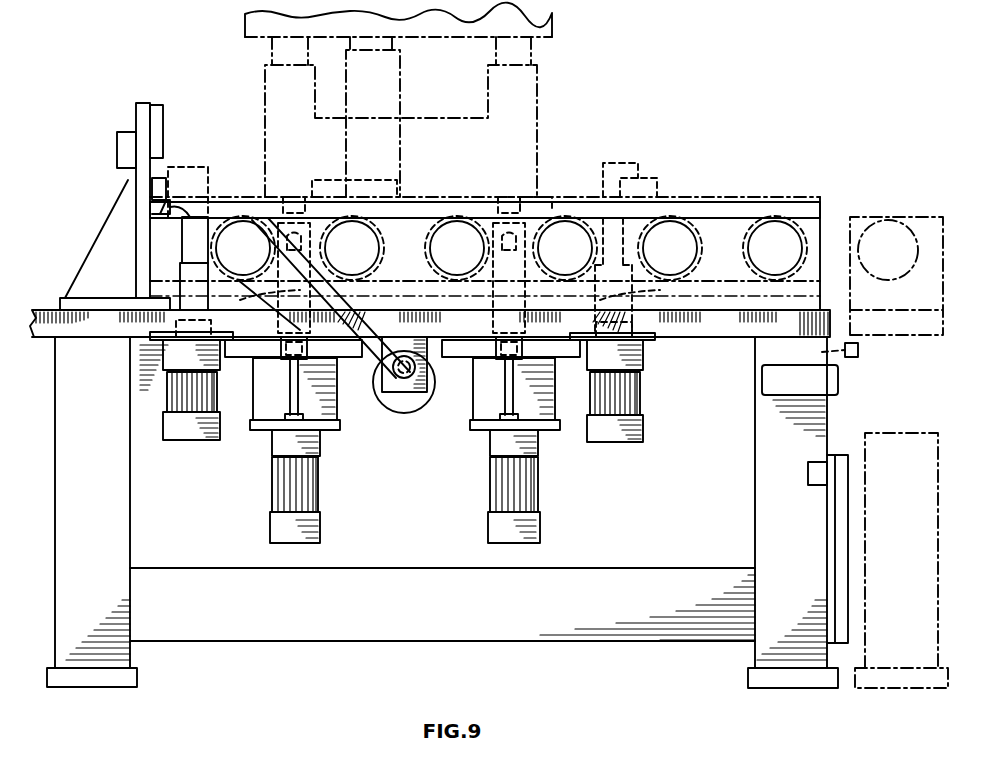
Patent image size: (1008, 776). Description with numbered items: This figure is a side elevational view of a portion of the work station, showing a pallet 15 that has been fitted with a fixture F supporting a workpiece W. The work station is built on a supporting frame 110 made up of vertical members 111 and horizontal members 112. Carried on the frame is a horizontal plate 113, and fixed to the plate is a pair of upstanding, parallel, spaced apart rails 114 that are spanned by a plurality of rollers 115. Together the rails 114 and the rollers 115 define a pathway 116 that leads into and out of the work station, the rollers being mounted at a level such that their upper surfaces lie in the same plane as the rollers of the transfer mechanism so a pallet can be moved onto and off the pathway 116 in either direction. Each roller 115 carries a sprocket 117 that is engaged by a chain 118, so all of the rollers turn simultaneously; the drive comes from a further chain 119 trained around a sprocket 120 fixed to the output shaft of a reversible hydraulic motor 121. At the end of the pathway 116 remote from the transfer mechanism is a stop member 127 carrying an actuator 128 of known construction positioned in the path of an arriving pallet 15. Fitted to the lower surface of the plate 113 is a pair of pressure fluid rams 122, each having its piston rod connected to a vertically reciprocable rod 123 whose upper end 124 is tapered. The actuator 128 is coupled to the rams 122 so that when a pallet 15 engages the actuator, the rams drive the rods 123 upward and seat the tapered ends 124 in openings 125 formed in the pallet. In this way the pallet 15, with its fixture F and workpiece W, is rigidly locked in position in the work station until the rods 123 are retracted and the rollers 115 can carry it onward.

The workpiece W is at (548, 22).
The fixture F is at (538, 128).
The pallet 15 is at (222, 200).
The supporting frame 110 is at (184, 664).
The vertical members 111 is at (756, 469).
The horizontal members 112 is at (596, 585).
The horizontal plate 113 is at (722, 346).
The rails 114 is at (722, 213).
The rollers 115 is at (752, 259).
The pathway 116 is at (820, 198).
The sprocket 117 is at (380, 233).
The chain 118 is at (490, 283).
The chain 119 is at (262, 290).
The sprocket 120 is at (393, 367).
The reversible hydraulic motor 121 is at (425, 405).
The pressure fluid rams 122 is at (553, 491).
The vertically reciprocable rod 123 is at (528, 302).
The tapered upper end 124 is at (510, 197).
The openings 125 is at (540, 205).
The stop member 127 is at (140, 191).
The actuator 128 is at (162, 212).